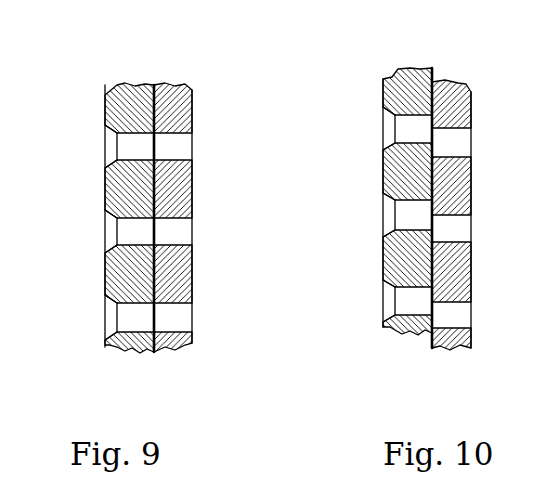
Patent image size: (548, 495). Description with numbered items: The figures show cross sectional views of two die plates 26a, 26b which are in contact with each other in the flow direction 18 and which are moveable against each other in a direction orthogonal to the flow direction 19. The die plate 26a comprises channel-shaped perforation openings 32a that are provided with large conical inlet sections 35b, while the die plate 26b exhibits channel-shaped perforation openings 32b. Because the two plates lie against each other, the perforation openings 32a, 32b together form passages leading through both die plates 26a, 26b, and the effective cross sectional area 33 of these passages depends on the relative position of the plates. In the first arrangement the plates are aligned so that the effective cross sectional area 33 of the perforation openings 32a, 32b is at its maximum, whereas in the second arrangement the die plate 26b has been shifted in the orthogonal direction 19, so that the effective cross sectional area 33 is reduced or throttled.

In FIG. 9, the flow direction 18 is at (127, 387).
In FIG. 10, the flow direction 18 is at (403, 385).
In FIG. 10, the direction orthogonal to the flow direction 19 is at (405, 55).
In FIG. 9, the die plate 26a is at (131, 80).
In FIG. 10, the die plate 26a is at (393, 70).
In FIG. 9, the die plate 26b is at (177, 83).
In FIG. 10, the die plate 26b is at (466, 77).
In FIG. 9, the perforation openings 32a is at (97, 318).
In FIG. 10, the perforation openings 32a is at (380, 317).
In FIG. 9, the perforation openings 32b is at (185, 321).
In FIG. 10, the perforation openings 32b is at (478, 142).
In FIG. 9, the effective cross sectional area 33 is at (158, 145).
In FIG. 10, the effective cross sectional area 33 is at (433, 138).
In FIG. 9, the conical inlet sections 35b is at (108, 163).
In FIG. 10, the conical inlet sections 35b is at (388, 144).